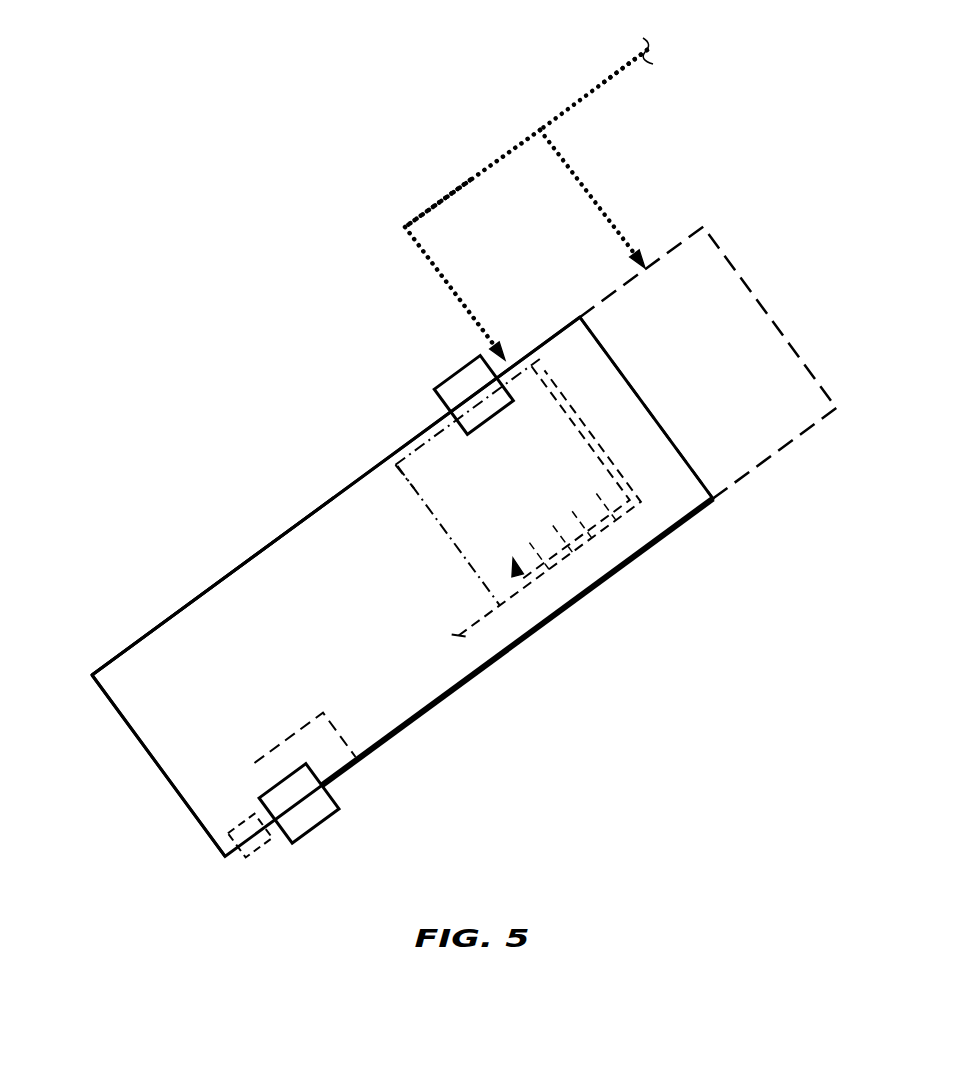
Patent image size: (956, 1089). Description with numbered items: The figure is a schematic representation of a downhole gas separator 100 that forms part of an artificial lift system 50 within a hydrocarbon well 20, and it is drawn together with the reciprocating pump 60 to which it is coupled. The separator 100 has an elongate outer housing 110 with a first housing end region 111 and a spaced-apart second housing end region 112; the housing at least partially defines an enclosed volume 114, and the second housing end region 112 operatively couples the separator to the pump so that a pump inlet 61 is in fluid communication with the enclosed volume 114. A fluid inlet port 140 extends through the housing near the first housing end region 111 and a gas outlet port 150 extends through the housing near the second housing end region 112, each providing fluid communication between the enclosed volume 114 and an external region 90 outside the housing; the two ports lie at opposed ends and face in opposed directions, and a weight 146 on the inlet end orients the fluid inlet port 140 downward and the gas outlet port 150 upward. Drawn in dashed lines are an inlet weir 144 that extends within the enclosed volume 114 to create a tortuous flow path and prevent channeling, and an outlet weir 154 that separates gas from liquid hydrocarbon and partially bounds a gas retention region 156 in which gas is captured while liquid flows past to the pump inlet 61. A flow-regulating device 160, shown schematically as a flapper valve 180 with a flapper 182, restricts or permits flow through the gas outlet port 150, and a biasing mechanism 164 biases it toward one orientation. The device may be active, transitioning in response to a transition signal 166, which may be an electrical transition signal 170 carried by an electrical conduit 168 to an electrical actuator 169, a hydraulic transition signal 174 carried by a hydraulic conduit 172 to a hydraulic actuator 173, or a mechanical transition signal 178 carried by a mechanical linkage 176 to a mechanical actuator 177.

The hydrocarbon well 20 is at (66, 135).
The artificial lift system 50 is at (81, 191).
The reciprocating pump 60 is at (690, 228).
The pump inlet 61 is at (663, 437).
The external region 90 is at (168, 326).
The downhole gas separator 100 is at (236, 205).
The elongate outer housing 110 is at (153, 608).
The first housing end region 111 is at (133, 737).
The second housing end region 112 is at (553, 336).
The enclosed volume 114 is at (130, 668).
The fluid inlet port 140 is at (320, 827).
The inlet weir 144 is at (345, 745).
The weight 146 is at (253, 857).
The gas outlet port 150 is at (450, 378).
The outlet weir 154 is at (466, 645).
The gas retention region 156 is at (442, 453).
The flow-regulating device 160 is at (398, 478).
The biasing mechanism 164 is at (615, 508).
The transition signal 166 is at (386, 256).
The electrical conduit 168 is at (582, 68).
The electrical actuator 169 is at (597, 495).
The electrical transition signal 170 is at (618, 68).
The hydraulic conduit 172 is at (495, 134).
The hydraulic actuator 173 is at (573, 513).
The hydraulic transition signal 174 is at (535, 130).
The mechanical linkage 176 is at (408, 198).
The mechanical actuator 177 is at (552, 525).
The mechanical transition signal 178 is at (447, 197).
The flapper valve 180 is at (530, 543).
The flapper 182 is at (518, 576).